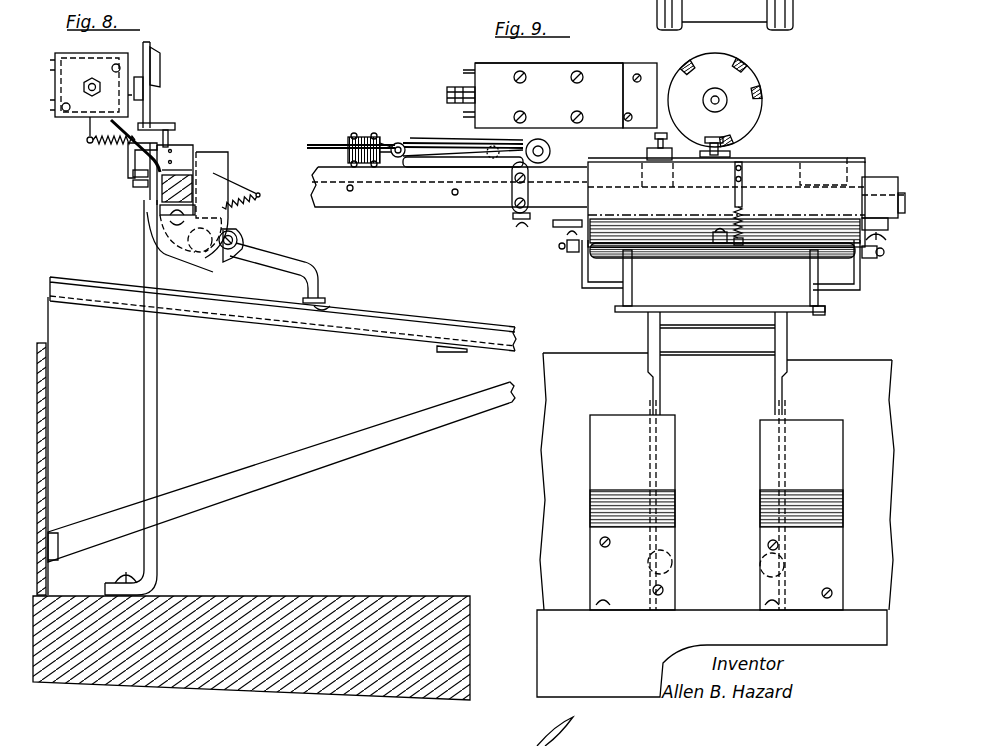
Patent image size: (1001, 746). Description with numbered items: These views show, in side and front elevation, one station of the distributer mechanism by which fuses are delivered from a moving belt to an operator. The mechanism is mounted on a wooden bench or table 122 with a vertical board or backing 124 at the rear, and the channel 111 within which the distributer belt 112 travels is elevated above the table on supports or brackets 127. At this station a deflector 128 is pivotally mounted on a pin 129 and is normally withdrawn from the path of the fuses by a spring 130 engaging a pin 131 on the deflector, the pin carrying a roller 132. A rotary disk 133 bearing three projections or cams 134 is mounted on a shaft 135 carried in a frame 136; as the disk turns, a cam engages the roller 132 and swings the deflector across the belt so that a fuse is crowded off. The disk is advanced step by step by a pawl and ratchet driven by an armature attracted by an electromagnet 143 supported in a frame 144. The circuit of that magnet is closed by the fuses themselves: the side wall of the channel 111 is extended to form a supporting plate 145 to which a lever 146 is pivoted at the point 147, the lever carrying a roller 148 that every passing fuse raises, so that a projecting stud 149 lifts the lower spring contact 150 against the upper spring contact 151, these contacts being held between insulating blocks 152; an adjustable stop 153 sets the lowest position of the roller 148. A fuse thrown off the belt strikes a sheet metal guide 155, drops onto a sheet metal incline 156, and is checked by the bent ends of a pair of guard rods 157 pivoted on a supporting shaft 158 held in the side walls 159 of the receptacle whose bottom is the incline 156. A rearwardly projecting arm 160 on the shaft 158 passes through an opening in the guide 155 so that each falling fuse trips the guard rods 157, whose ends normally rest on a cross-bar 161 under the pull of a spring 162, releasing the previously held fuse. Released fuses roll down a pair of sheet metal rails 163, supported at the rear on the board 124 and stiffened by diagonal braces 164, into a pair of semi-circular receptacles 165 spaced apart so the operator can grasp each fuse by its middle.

In FIG. 8, the channel 111 is at (133, 162).
In FIG. 9, the channel 111 is at (877, 175).
In FIG. 8, the distributer belt 112 is at (215, 157).
In FIG. 9, the distributer belt 112 is at (320, 182).
In FIG. 8, the bench or table 122 is at (403, 608).
In FIG. 9, the bench or table 122 is at (710, 617).
In FIG. 8, the vertical board or backing 124 is at (48, 433).
In FIG. 9, the vertical board or backing 124 is at (547, 534).
In FIG. 8, the supports or brackets 127 is at (157, 437).
In FIG. 8, the deflector 128 is at (181, 172).
In FIG. 9, the deflector 128 is at (788, 160).
In FIG. 8, the pin 129 is at (133, 183).
In FIG. 9, the pin 129 is at (653, 145).
In FIG. 8, the spring 130 is at (110, 147).
In FIG. 9, the spring 130 is at (730, 152).
In FIG. 8, the pin 131 is at (177, 143).
In FIG. 9, the pin 131 is at (732, 148).
In FIG. 8, the roller 132 is at (167, 123).
In FIG. 9, the roller 132 is at (712, 137).
In FIG. 8, the rotary disk 133 is at (150, 43).
In FIG. 9, the rotary disk 133 is at (758, 100).
In FIG. 9, the projections or cams 134 is at (708, 64).
In FIG. 8, the shaft 135 is at (151, 48).
In FIG. 9, the shaft 135 is at (715, 88).
In FIG. 8, the frame 136 is at (121, 48).
In FIG. 9, the frame 136 is at (658, 72).
In FIG. 9, the electromagnet 143 is at (602, 68).
In FIG. 9, the frame 144 is at (550, 72).
In FIG. 9, the supporting plate 145 is at (398, 167).
In FIG. 9, the lever 146 is at (414, 142).
In FIG. 9, the pivot point 147 is at (399, 143).
In FIG. 9, the roller 148 is at (549, 158).
In FIG. 9, the projecting stud 149 is at (491, 158).
In FIG. 9, the lower spring contact 150 is at (452, 133).
In FIG. 9, the upper spring contact 151 is at (427, 145).
In FIG. 9, the insulating blocks 152 is at (341, 145).
In FIG. 9, the adjustable stop 153 is at (532, 200).
In FIG. 8, the sheet metal guide 155 is at (162, 248).
In FIG. 9, the sheet metal guide 155 is at (600, 220).
In FIG. 8, the sheet metal incline 156 is at (270, 286).
In FIG. 9, the sheet metal incline 156 is at (800, 293).
In FIG. 8, the guard rods 157 is at (322, 280).
In FIG. 9, the guard rods 157 is at (615, 302).
In FIG. 8, the supporting shaft 158 is at (247, 237).
In FIG. 9, the supporting shaft 158 is at (782, 252).
In FIG. 8, the side walls 159 is at (207, 258).
In FIG. 8, the rearwardly projecting arm 160 is at (148, 228).
In FIG. 9, the rearwardly projecting arm 160 is at (707, 236).
In FIG. 8, the cross-bar 161 is at (337, 304).
In FIG. 9, the cross-bar 161 is at (822, 314).
In FIG. 8, the spring 162 is at (261, 199).
In FIG. 9, the spring 162 is at (744, 220).
In FIG. 8, the rails 163 is at (411, 319).
In FIG. 9, the rails 163 is at (757, 328).
In FIG. 8, the diagonal braces 164 is at (315, 447).
In FIG. 9, the diagonal braces 164 is at (649, 398).
In FIG. 9, the semi-circular receptacles 165 is at (765, 486).